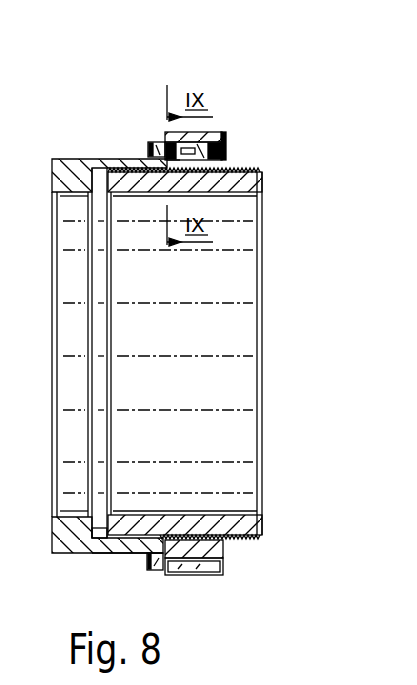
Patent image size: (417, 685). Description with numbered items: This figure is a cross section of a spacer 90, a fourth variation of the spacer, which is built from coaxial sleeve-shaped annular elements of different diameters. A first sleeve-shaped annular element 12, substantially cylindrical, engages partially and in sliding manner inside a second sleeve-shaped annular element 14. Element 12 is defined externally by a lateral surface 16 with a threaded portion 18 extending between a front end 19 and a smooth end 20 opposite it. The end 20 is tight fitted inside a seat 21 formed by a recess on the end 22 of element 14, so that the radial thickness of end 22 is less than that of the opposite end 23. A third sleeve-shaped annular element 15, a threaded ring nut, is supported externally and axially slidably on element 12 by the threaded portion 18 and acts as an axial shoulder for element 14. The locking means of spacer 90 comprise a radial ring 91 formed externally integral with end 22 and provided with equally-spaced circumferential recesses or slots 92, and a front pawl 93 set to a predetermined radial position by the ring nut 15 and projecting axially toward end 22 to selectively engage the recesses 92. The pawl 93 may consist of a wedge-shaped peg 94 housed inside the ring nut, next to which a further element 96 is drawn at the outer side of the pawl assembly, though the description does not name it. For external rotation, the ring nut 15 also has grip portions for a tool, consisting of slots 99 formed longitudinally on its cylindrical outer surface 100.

The first sleeve-shaped annular element 12 is at (213, 182).
The second sleeve-shaped annular element 14 is at (98, 162).
The third sleeve-shaped annular element 15 is at (215, 548).
The lateral surface 16 is at (119, 164).
The threaded portion 18 is at (241, 165).
The front end 19 is at (262, 509).
The end 20 is at (121, 530).
The seat 21 is at (94, 530).
The end 22 is at (117, 548).
The opposite end 23 is at (52, 529).
The spacer 90 is at (257, 95).
The radial ring 91 is at (155, 142).
The recesses or slots 92 is at (152, 570).
The front pawl 93 is at (219, 127).
The wedge-shaped peg 94 is at (173, 160).
The retaining ring 96 is at (221, 133).
The slots 99 is at (213, 566).
The cylindrical outer surface 100 is at (190, 580).